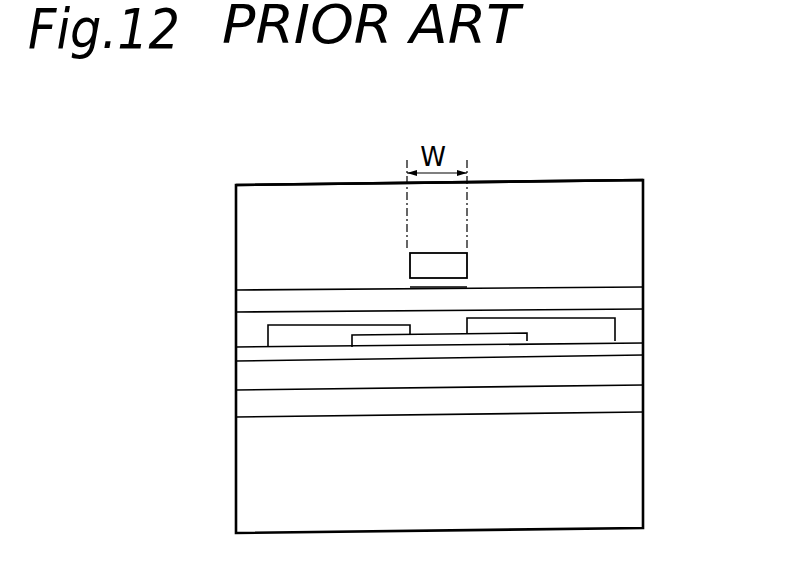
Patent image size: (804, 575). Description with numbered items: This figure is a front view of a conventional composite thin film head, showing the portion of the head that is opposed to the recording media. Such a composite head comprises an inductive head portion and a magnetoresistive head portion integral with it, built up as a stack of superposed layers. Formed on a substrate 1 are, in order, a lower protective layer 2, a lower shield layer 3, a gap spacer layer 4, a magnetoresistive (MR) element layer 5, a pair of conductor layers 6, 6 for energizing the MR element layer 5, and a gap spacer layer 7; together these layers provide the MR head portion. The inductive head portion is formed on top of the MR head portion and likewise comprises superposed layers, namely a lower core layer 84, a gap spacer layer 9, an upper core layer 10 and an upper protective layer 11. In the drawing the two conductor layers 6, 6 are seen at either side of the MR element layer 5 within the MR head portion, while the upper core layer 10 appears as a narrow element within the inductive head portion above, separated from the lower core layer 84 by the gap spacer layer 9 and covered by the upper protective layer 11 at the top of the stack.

The substrate 1 is at (622, 458).
The lower protective layer 2 is at (622, 400).
The lower shield layer 3 is at (625, 371).
The gap spacer layer 4 is at (628, 347).
The magnetoresistive (MR) element layer 5 is at (430, 337).
The conductor layers 6 is at (335, 337).
The gap spacer layer 7 is at (448, 320).
The lower core layer 84 is at (513, 293).
The gap spacer layer 9 is at (455, 280).
The upper core layer 10 is at (443, 258).
The upper protective layer 11 is at (604, 220).